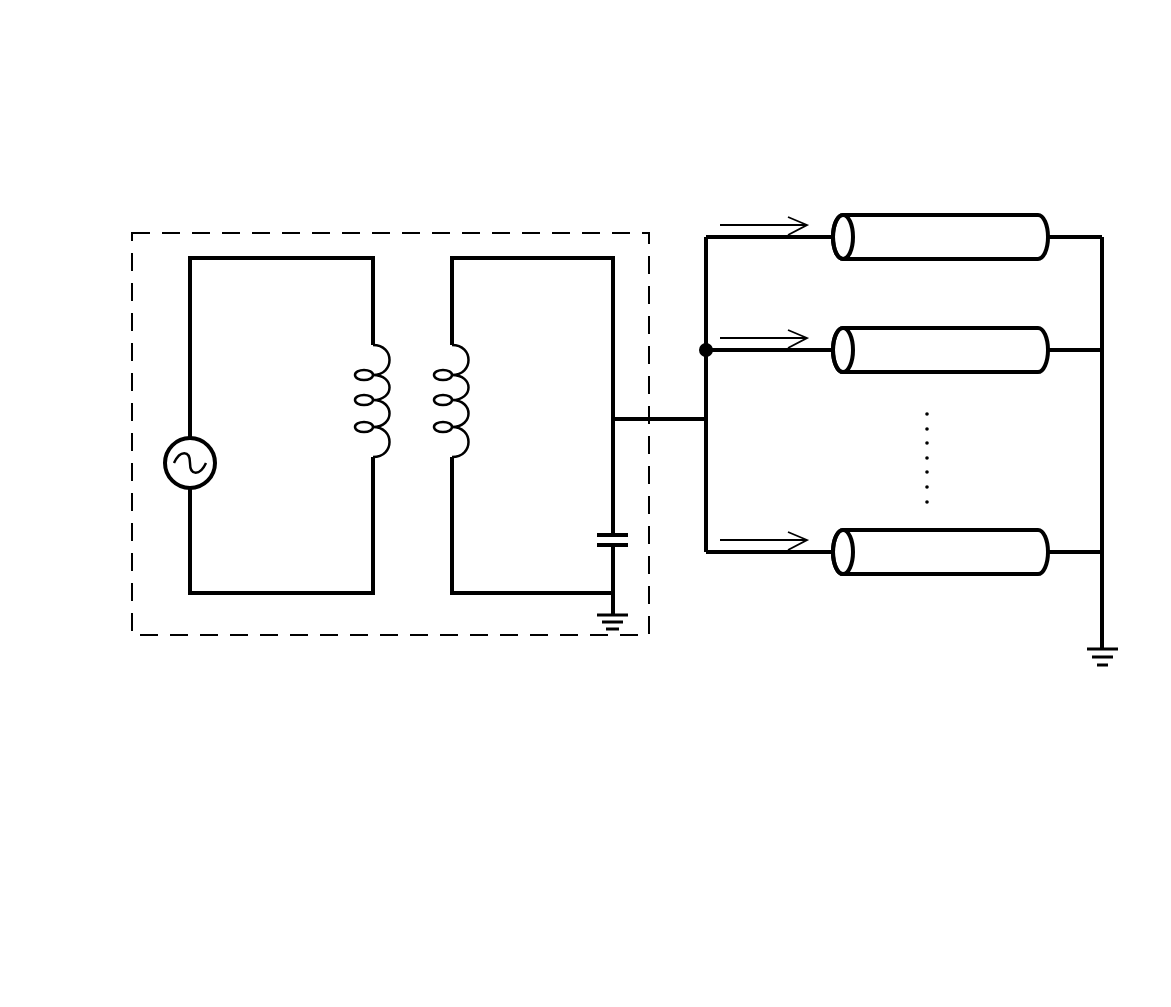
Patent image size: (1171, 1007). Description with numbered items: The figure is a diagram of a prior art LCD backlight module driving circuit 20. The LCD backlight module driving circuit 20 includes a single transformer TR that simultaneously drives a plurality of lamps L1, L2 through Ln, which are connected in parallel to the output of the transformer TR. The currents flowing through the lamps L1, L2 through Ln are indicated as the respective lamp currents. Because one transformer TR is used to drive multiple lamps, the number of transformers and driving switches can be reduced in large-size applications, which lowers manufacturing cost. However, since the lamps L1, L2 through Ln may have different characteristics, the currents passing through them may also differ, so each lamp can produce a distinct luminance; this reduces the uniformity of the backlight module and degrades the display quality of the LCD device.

The LCD backlight module driving circuit 20 is at (1043, 126).
The transformer TR is at (131, 494).
The lamp L1 is at (940, 237).
The lamp L2 is at (940, 350).
The lamp Ln is at (940, 552).